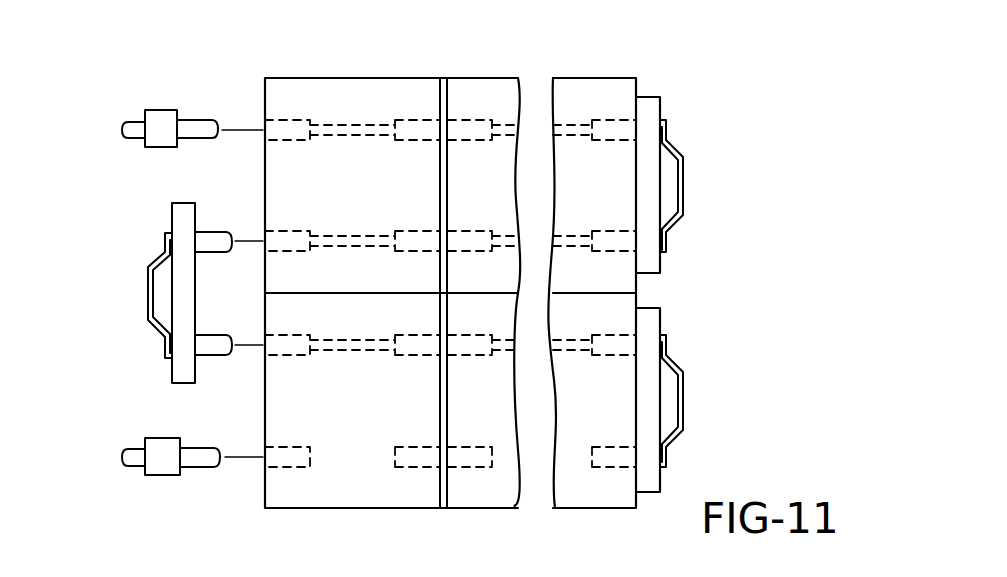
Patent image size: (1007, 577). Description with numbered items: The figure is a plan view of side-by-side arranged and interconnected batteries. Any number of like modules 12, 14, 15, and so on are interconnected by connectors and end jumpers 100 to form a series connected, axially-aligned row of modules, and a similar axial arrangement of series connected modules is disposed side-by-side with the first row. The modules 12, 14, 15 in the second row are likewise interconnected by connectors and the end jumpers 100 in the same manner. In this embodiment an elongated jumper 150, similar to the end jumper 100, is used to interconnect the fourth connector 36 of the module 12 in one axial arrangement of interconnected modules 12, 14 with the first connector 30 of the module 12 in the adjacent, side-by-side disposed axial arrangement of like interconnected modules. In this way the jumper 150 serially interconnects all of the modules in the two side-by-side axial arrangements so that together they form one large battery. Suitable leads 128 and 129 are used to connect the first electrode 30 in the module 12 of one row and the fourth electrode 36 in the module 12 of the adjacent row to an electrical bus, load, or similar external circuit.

The module 12 is at (312, 91).
The module 14 is at (511, 157).
The module 15 is at (619, 92).
The end jumper 100 is at (681, 158).
The fourth connector 36 is at (290, 131).
The first connector 30 is at (287, 242).
The lead 128 is at (130, 118).
The lead 129 is at (130, 450).
The jumper 150 is at (143, 291).